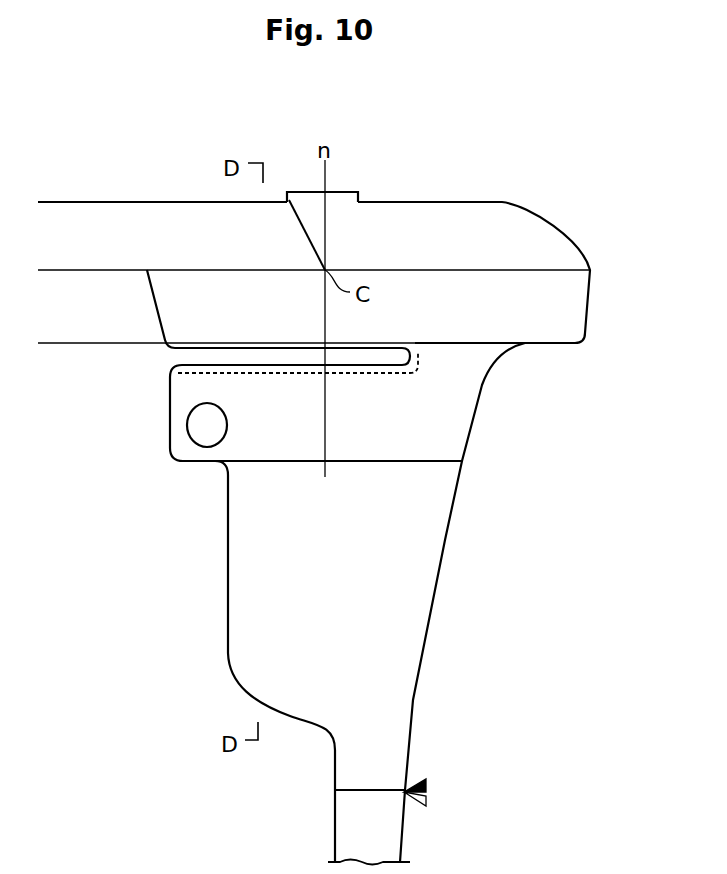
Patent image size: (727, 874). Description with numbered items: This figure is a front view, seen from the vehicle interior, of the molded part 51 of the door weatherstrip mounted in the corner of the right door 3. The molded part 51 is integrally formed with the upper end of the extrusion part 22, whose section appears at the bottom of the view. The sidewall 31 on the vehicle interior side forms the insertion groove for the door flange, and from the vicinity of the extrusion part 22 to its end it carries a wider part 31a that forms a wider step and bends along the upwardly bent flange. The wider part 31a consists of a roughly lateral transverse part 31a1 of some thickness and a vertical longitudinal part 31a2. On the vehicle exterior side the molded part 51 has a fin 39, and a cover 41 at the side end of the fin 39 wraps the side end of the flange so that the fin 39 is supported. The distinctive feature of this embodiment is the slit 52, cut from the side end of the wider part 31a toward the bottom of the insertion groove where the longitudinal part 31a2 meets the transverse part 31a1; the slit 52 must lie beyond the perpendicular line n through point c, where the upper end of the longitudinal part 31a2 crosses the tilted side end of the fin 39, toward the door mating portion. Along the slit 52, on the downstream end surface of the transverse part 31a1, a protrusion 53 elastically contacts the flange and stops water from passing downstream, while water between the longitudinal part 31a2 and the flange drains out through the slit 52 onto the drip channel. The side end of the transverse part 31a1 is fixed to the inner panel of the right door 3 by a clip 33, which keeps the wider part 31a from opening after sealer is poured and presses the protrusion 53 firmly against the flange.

The right door 3 is at (151, 205).
The cover 41 is at (341, 196).
The fin 39 is at (456, 212).
The longitudinal part 31a2 is at (263, 284).
The slit 52 is at (288, 368).
The protrusion 53 is at (358, 376).
The transverse part 31a1 is at (178, 390).
The clip 33 is at (196, 430).
The molded part 51 is at (223, 592).
The wider part 31a is at (388, 587).
The sidewall 31 is at (425, 597).
The extrusion part 22 is at (346, 828).